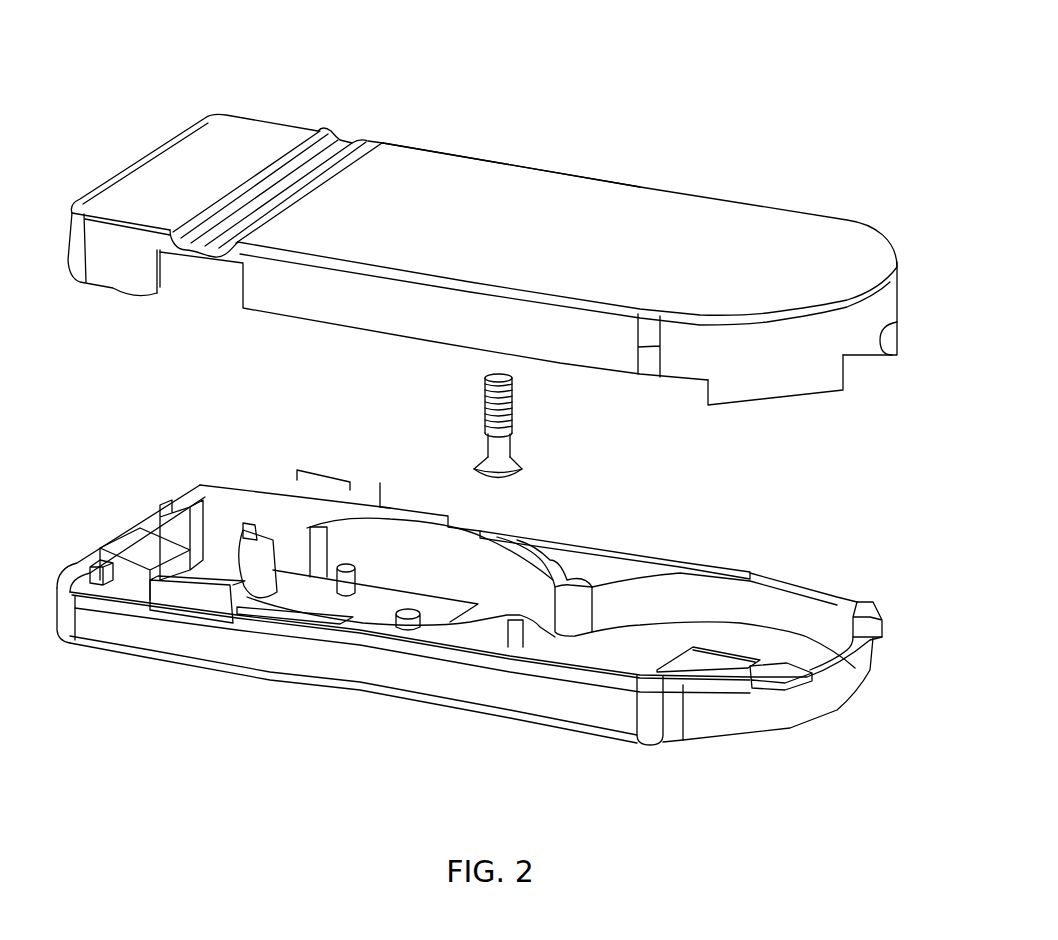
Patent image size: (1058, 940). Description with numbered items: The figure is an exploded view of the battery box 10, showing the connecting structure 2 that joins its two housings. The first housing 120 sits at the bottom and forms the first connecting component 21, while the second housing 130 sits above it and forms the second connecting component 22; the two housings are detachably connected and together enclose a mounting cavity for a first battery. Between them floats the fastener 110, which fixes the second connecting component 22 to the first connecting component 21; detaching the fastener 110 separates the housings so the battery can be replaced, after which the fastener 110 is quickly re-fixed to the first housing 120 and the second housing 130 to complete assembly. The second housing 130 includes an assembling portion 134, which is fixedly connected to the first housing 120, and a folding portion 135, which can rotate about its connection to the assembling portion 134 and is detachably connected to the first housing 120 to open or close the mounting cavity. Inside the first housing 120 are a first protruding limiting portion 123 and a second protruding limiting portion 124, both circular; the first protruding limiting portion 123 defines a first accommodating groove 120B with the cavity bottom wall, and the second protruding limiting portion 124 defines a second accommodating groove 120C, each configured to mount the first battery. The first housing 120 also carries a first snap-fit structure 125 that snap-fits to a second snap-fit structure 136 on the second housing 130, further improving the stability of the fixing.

The battery box 10 is at (524, 54).
The second housing 130 is at (483, 256).
The assembling portion 134 is at (240, 130).
The folding portion 135 is at (526, 190).
The second snap-fit structure 136 is at (724, 393).
The second connecting component 22 is at (822, 368).
The connecting structure 2 is at (903, 440).
The first connecting component 21 is at (838, 600).
The fastener 110 is at (514, 402).
The first housing 120 is at (478, 611).
The second accommodating groove 120C is at (378, 550).
The first accommodating groove 120B is at (757, 600).
The second protruding limiting portion 124 is at (538, 552).
The first protruding limiting portion 123 is at (692, 576).
The first snap-fit structure 125 is at (780, 690).